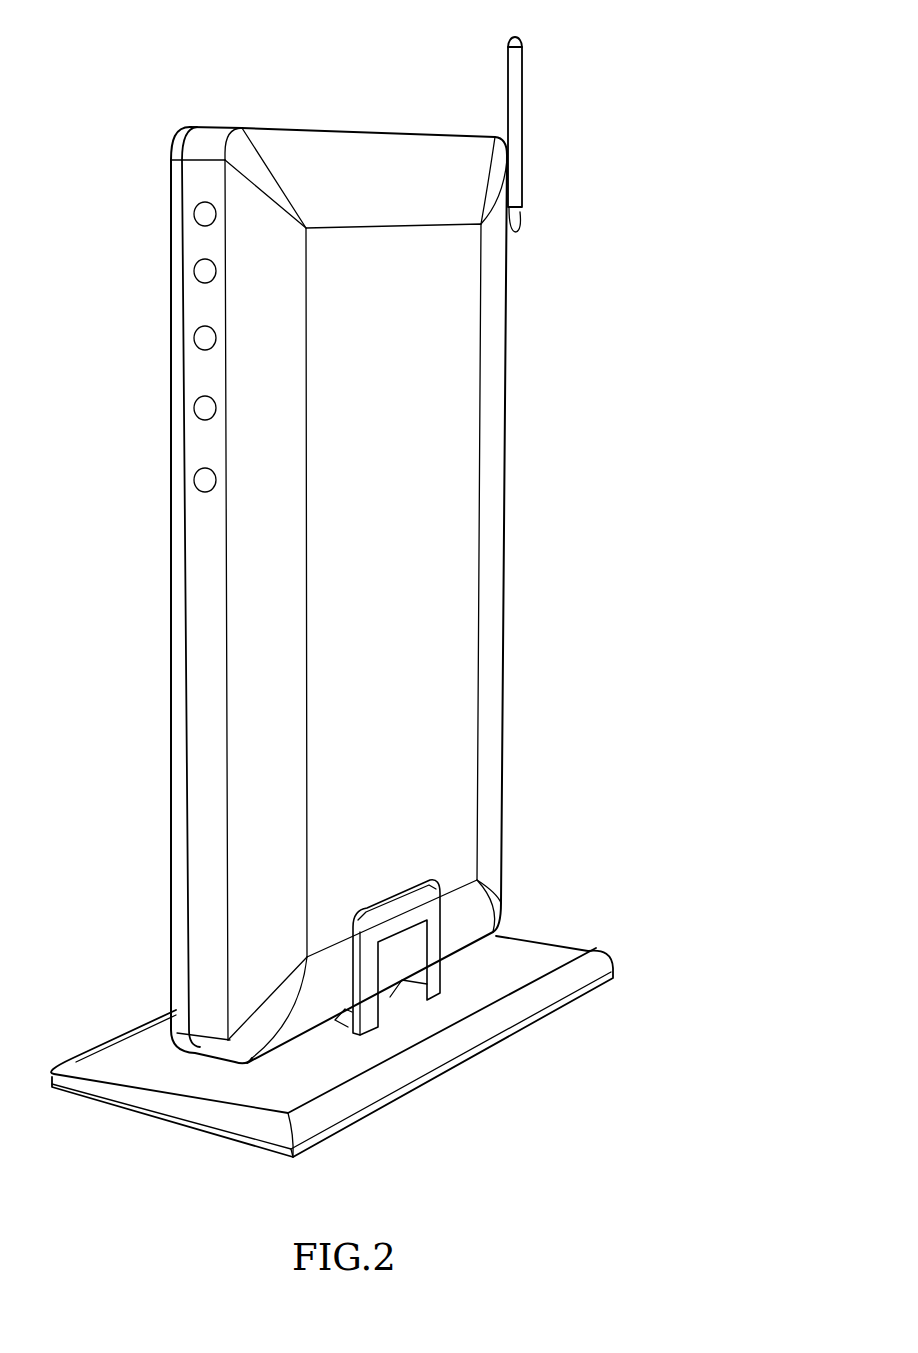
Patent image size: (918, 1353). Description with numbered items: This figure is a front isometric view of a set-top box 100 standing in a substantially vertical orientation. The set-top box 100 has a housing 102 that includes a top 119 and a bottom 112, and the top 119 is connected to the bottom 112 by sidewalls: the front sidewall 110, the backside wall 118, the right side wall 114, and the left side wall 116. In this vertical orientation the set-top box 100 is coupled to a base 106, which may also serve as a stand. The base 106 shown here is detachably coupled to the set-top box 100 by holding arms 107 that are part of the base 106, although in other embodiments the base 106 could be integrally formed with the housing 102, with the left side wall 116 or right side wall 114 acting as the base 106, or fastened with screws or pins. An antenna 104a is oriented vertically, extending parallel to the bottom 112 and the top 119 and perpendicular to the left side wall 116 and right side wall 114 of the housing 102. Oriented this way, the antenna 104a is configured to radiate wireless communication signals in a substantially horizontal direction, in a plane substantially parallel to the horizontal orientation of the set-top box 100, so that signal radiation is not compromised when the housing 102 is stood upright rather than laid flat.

The set-top box 100 is at (680, 112).
The housing 102 is at (493, 355).
The antenna 104a is at (517, 108).
The base 106 is at (558, 957).
The holding arms 107 is at (437, 987).
The front sidewall 110 is at (207, 837).
The bottom 112 is at (145, 572).
The right side wall 114 is at (268, 1078).
The left side wall 116 is at (255, 88).
The backside wall 118 is at (528, 708).
The top 119 is at (438, 548).